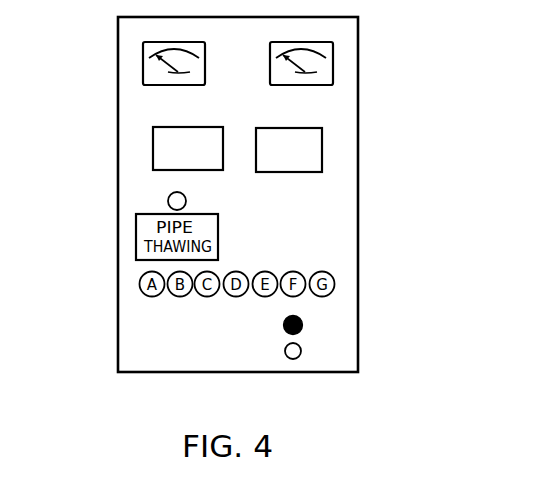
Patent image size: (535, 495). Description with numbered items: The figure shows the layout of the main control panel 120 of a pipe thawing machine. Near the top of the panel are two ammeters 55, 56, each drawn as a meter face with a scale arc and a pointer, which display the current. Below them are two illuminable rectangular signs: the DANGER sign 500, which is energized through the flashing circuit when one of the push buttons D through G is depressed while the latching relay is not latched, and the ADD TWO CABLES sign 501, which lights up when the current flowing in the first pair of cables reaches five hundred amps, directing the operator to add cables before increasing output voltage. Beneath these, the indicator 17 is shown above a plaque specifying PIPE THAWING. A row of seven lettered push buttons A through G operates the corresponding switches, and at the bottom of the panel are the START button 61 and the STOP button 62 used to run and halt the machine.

The control panel 120 is at (330, 247).
The ammeter 56 is at (143, 68).
The ammeter 55 is at (333, 68).
The DANGER sign 500 is at (153, 146).
The ADD 2 CABLES sign 501 is at (322, 155).
The indicator 17 is at (186, 202).
The START button 61 is at (303, 325).
The STOP button 62 is at (301, 351).